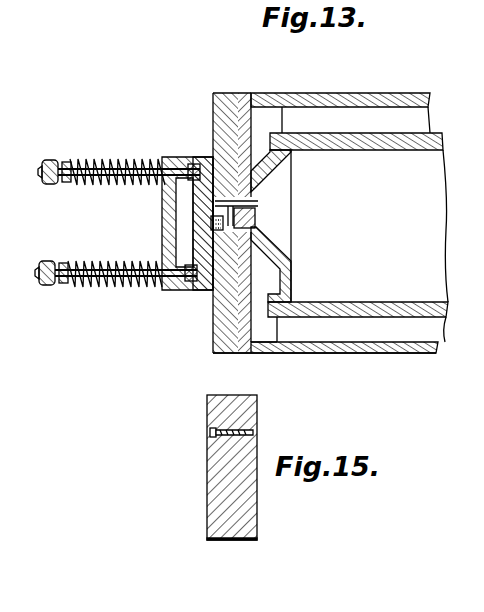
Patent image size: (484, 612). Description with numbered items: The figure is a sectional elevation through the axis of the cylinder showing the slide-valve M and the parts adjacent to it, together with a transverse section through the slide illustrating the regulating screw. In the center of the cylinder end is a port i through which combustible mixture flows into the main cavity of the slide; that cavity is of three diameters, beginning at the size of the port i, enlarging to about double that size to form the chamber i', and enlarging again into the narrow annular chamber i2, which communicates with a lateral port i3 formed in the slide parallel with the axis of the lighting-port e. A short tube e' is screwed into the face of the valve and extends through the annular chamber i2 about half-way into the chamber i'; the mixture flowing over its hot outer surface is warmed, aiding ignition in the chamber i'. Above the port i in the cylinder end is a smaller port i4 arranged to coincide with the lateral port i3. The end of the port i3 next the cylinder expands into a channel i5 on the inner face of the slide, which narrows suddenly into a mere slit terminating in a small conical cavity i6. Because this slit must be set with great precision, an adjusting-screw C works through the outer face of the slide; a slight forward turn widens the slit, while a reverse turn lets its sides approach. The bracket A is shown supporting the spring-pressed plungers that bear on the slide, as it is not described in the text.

In FIG. 13, the slide-valve M is at (197, 168).
In FIG. 13, the bracket A is at (176, 209).
In FIG. 13, the lateral port i3 is at (195, 223).
In FIG. 13, the lighting-port e is at (220, 215).
In FIG. 13, the short tube e' is at (201, 233).
In FIG. 13, the narrow annular chamber i2 is at (200, 258).
In FIG. 13, the port i is at (246, 218).
In FIG. 13, the channel i5 is at (262, 205).
In FIG. 13, the smaller port i4 is at (271, 264).
In FIG. 13, the chamber i' is at (264, 301).
In FIG. 15, the adjusting-screw C is at (210, 433).
In FIG. 15, the small conical cavity i6 is at (255, 432).